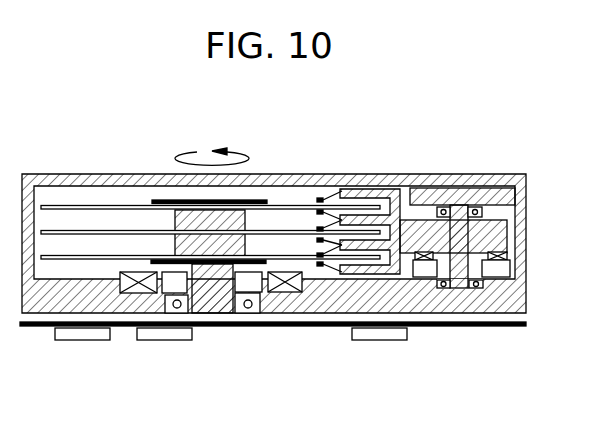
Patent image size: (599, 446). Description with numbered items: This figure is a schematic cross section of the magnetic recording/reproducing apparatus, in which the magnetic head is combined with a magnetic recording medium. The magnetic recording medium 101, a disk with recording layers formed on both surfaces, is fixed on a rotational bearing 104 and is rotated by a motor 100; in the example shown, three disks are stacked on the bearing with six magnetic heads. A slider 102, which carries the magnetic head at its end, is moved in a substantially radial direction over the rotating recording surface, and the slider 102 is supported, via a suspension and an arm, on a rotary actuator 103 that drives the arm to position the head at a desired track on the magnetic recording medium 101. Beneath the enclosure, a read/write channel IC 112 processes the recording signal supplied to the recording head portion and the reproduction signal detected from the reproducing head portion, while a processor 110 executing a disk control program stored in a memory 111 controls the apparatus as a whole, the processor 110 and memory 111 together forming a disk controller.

The motor 100 is at (265, 293).
The magnetic recording medium 101 is at (60, 206).
The slider 102 is at (318, 197).
The rotary actuator 103 is at (508, 232).
The rotational bearing 104 is at (215, 313).
The processor 110 is at (83, 340).
The memory 111 is at (165, 340).
The read/write channel IC 112 is at (390, 340).